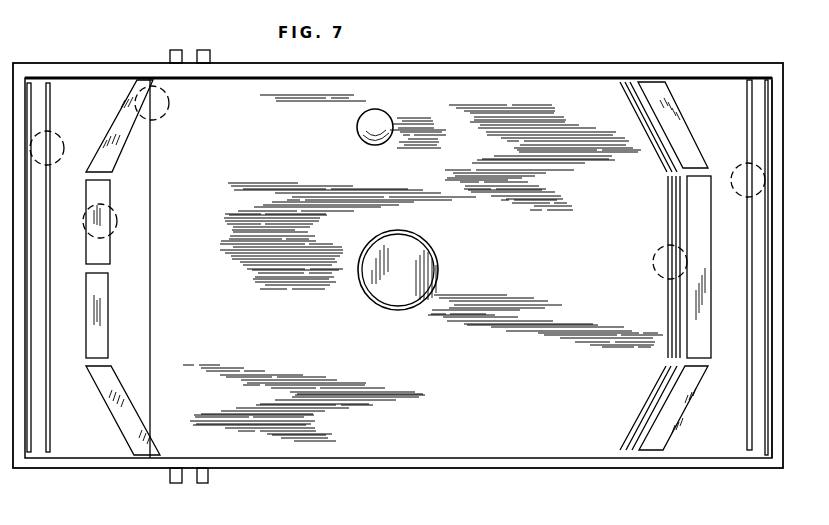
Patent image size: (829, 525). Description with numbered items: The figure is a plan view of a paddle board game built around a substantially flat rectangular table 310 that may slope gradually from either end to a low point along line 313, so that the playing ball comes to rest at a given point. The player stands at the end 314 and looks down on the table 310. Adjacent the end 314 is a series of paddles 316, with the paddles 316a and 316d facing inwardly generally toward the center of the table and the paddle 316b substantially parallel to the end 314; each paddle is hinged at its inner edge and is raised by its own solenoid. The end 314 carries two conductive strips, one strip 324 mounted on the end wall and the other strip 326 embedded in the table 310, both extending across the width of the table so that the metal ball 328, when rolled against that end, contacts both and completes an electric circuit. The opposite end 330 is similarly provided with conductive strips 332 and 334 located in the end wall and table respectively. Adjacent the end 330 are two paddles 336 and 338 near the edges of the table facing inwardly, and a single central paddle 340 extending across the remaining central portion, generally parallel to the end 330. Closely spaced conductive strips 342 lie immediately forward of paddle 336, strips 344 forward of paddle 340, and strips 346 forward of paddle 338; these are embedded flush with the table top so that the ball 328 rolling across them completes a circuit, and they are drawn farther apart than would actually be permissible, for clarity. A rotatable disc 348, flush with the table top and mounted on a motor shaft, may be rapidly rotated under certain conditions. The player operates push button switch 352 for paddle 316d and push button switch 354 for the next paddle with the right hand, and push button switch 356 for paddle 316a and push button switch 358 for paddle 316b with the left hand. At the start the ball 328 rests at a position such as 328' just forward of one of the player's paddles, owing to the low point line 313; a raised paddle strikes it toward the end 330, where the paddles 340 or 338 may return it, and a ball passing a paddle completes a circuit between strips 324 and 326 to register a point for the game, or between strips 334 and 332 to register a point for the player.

The table 310 is at (492, 452).
The conductive strip 324 is at (30, 97).
The table end 314 is at (58, 492).
The conductive strip 326 is at (52, 112).
The low point line 313 is at (152, 203).
The ball rest position 328' is at (181, 103).
The paddle 316a is at (118, 160).
The paddle 316b is at (110, 252).
The paddles 316 is at (110, 322).
The paddle 316d is at (140, 408).
The metal ball 328 is at (396, 124).
The rotatable disc 348 is at (424, 255).
The conductive strips 342 is at (626, 110).
The paddle 336 is at (672, 115).
The central paddle 340 is at (688, 222).
The conductive strips 344 is at (668, 308).
The conductive strips 346 is at (660, 397).
The paddle 338 is at (684, 412).
The conductive strip 334 is at (745, 428).
The conductive strip 332 is at (766, 436).
The table end 330 is at (772, 460).
The push button switch 358 is at (170, 56).
The push button switch 356 is at (214, 46).
The push button switch 354 is at (170, 481).
The push button switch 352 is at (208, 480).